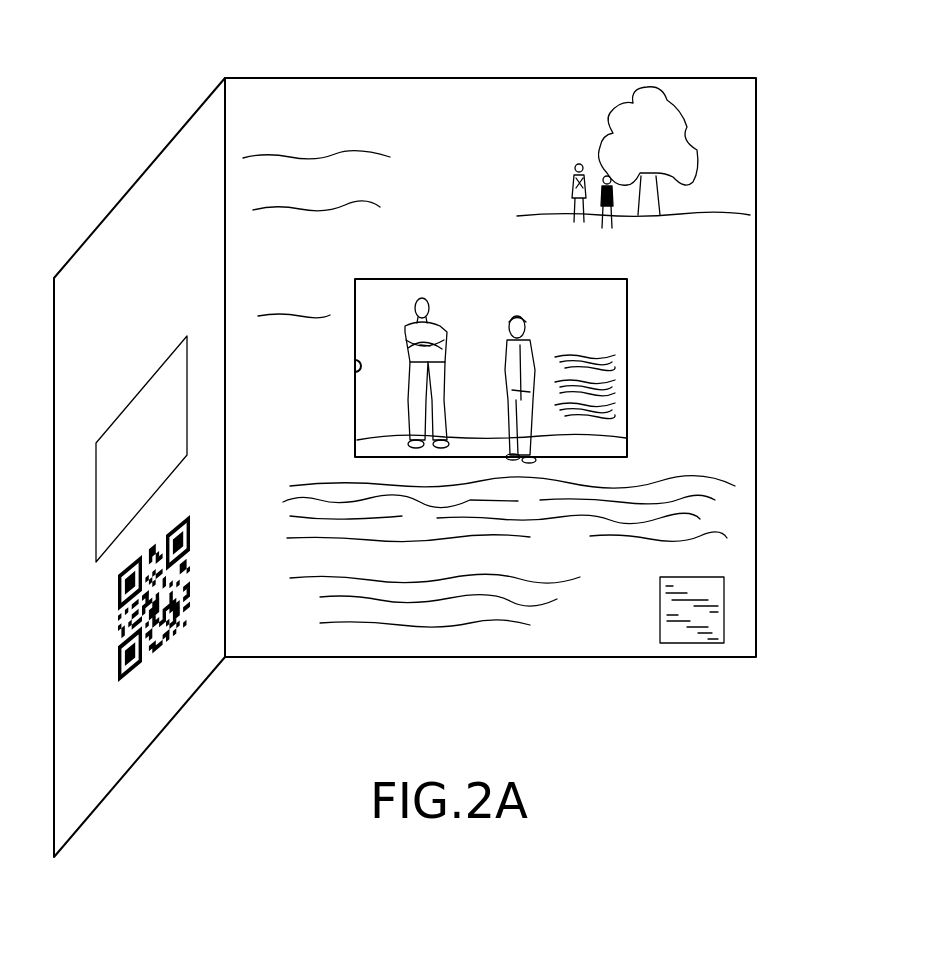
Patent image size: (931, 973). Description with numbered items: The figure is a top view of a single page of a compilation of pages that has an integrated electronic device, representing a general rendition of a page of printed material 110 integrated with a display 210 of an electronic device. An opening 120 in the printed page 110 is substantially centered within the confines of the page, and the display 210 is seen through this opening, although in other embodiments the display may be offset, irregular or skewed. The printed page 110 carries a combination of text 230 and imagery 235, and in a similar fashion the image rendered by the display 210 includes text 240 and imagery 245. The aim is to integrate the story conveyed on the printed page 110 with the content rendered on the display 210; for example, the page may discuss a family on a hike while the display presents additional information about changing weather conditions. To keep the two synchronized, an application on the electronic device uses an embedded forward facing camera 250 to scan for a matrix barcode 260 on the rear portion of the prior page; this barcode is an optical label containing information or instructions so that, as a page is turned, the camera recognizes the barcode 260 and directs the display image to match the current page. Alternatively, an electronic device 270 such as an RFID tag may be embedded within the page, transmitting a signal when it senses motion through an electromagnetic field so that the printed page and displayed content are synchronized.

The printed page 110 is at (553, 95).
The opening 120 is at (627, 275).
The display 210 is at (555, 280).
The text 230 is at (283, 213).
The imagery 235 is at (683, 157).
The text 240 is at (640, 386).
The imagery 245 is at (460, 303).
The forward facing camera 250 is at (357, 367).
The matrix barcode 260 is at (137, 660).
The electronic device 270 is at (673, 633).